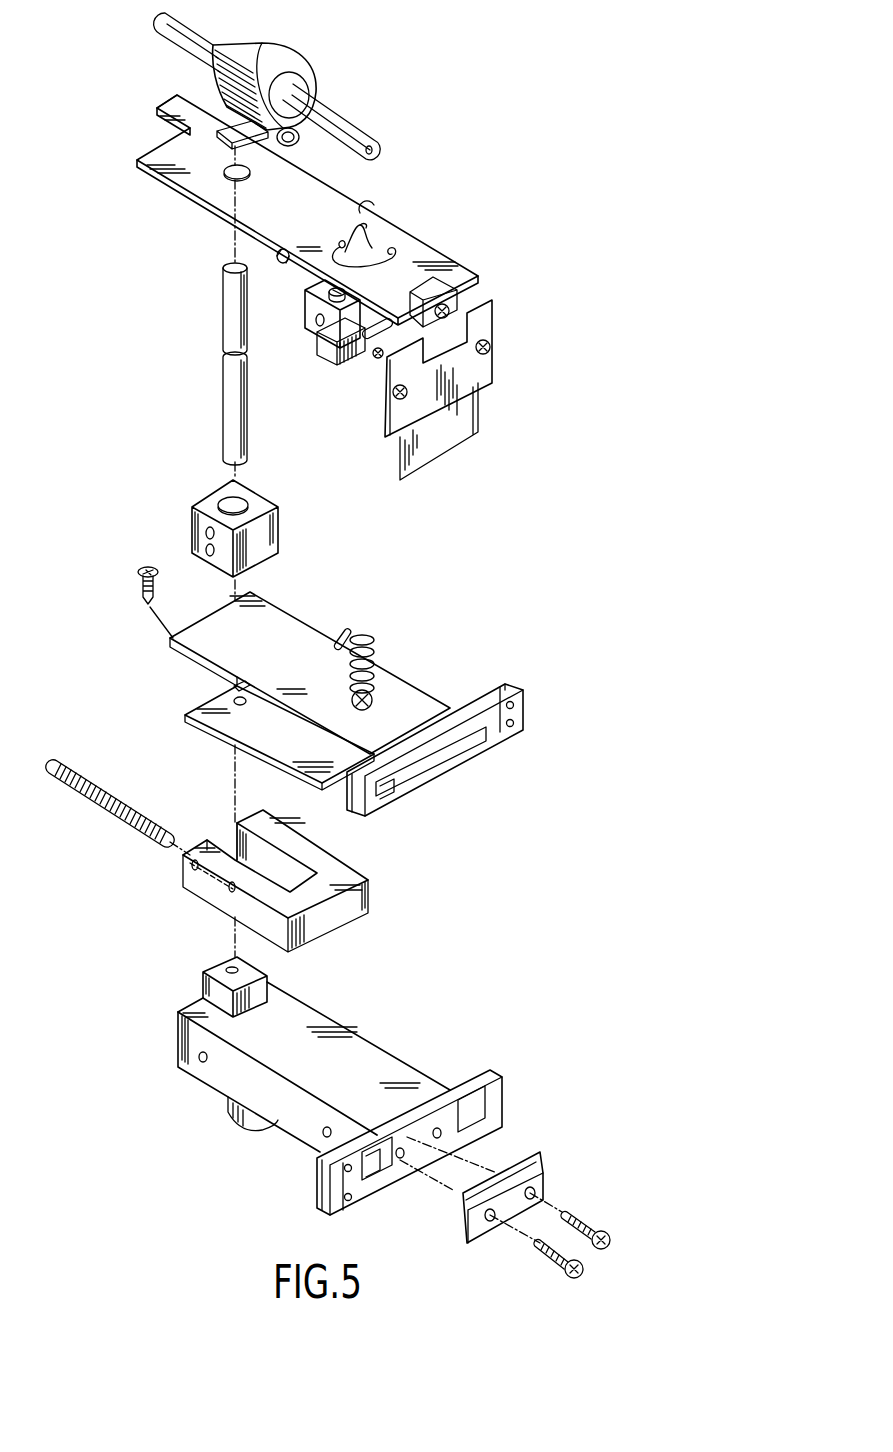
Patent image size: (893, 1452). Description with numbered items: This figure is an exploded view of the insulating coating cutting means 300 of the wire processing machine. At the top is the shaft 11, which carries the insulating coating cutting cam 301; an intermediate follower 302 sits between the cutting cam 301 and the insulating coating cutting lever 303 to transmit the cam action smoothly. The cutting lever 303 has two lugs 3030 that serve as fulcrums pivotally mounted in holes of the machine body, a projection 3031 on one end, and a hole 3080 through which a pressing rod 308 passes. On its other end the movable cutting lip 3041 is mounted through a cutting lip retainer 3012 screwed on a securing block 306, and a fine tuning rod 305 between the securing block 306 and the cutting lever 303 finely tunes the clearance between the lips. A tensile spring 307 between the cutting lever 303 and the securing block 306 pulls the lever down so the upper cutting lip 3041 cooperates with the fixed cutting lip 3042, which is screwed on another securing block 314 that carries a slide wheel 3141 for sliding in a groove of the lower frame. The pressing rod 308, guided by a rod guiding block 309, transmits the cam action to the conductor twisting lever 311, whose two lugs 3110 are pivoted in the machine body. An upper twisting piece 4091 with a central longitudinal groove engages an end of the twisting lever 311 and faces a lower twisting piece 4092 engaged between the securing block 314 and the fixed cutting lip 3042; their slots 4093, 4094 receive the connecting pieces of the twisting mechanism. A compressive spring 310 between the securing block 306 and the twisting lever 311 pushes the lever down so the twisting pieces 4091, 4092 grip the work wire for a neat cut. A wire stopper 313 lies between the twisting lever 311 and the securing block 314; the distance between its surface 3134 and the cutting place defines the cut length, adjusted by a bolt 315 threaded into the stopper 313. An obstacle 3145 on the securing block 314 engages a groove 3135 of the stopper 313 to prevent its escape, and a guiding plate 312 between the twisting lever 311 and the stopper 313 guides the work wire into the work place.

The shaft 11 is at (347, 132).
The insulating coating cutting cam 301 is at (267, 60).
The intermediate follower 302 is at (233, 128).
The projection 3031 is at (163, 100).
The hole 3080 is at (227, 174).
The lugs 3030 is at (375, 207).
The insulating coating cutting lever 303 is at (370, 232).
The cutting lip retainer 3012 is at (487, 318).
The movable cutting lip 3041 is at (470, 417).
The insulating coating cutting means 300 is at (475, 457).
The fine tuning rod 305 is at (378, 333).
The securing block 306 is at (305, 313).
The tensile spring 307 is at (323, 287).
The pressing rod 308 is at (228, 292).
The rod guiding block 309 is at (207, 498).
The lugs 3110 is at (337, 630).
The compressive spring 310 is at (373, 653).
The conductor twisting lever 311 is at (217, 627).
The guiding plate 312 is at (218, 703).
The upper twisting piece 4091 is at (477, 698).
The slot 4093 is at (505, 680).
The bolt 315 is at (100, 790).
The groove 3135 is at (227, 841).
The wire stopper 313 is at (333, 868).
The surface 3134 is at (342, 915).
The obstacle 3145 is at (205, 983).
The securing block 314 is at (367, 1058).
The lower twisting piece 4092 is at (482, 1075).
The slide wheel 3141 is at (243, 1117).
The slot 4094 is at (317, 1156).
The fixed cutting lip 3042 is at (528, 1153).